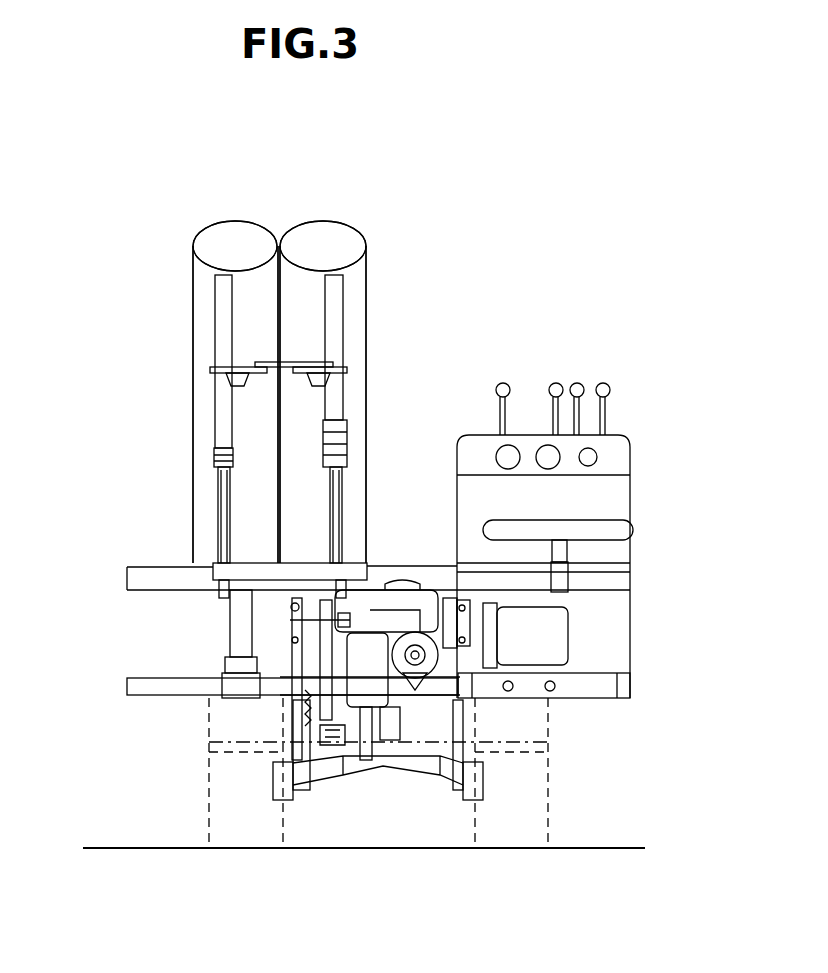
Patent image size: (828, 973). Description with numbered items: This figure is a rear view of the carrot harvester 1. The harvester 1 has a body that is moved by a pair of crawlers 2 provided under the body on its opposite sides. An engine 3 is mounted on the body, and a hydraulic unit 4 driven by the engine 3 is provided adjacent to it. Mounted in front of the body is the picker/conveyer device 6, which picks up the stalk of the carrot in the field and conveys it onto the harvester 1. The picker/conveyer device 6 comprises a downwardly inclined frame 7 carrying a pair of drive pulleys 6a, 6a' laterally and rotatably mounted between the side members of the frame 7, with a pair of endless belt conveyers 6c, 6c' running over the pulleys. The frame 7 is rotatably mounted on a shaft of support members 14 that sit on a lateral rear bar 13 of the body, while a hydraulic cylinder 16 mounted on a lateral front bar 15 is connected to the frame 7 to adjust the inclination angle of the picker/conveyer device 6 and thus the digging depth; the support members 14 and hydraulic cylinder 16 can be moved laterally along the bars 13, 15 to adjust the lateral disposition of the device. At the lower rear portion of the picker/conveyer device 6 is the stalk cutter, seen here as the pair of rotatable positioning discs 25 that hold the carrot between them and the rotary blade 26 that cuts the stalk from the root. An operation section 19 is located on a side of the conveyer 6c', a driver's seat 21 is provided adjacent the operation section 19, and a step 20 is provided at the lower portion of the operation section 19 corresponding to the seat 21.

The harvester 1 is at (498, 245).
The crawlers 2 is at (215, 820).
The engine 3 is at (375, 565).
The hydraulic unit 4 is at (557, 630).
The picker/conveyer device 6 is at (130, 333).
The drive pulley 6a is at (203, 221).
The drive pulley 6a' is at (341, 221).
The endless belt conveyer 6c is at (206, 404).
The endless belt conveyer 6c' is at (354, 404).
The frame 7 is at (217, 433).
The lateral rear bar 13 is at (167, 590).
The support members 14 is at (222, 540).
The lateral front bar 15 is at (160, 695).
The hydraulic cylinder 16 is at (230, 620).
The operation section 19 is at (612, 436).
The step 20 is at (612, 668).
The driver's seat 21 is at (633, 528).
The positioning discs 25 is at (200, 372).
The rotary blade 26 is at (312, 360).